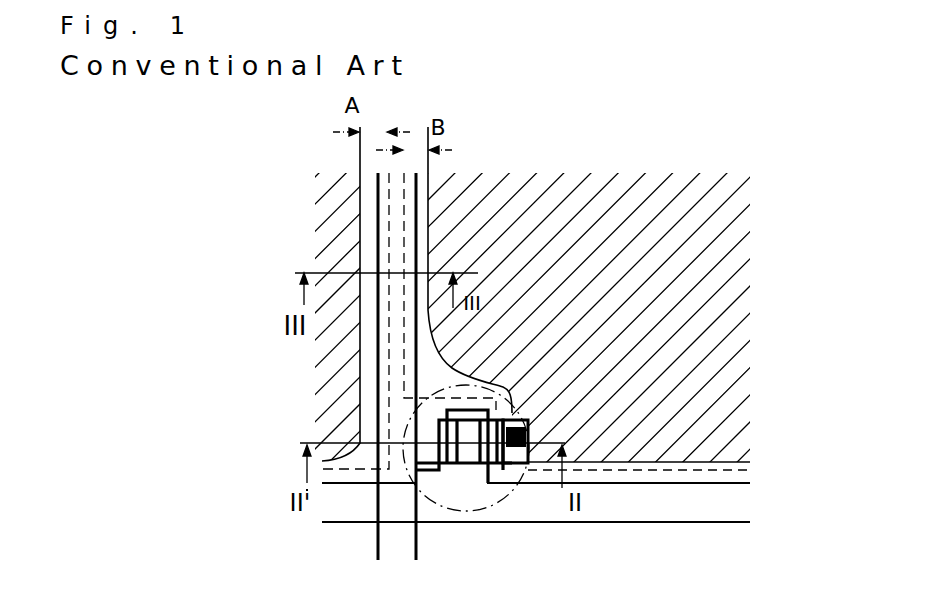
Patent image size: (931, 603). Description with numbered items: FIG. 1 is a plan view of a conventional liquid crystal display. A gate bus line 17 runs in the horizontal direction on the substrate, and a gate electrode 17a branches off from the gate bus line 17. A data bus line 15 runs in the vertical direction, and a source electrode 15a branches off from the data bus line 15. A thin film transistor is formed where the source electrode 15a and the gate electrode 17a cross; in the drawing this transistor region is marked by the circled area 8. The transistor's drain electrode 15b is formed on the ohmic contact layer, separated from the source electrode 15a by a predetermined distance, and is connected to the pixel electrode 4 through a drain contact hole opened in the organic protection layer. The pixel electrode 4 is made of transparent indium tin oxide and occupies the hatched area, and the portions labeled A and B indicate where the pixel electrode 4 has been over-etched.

The pixel electrode 4 is at (712, 310).
The thin film transistor 8 is at (483, 513).
The data bus line 15 is at (388, 543).
The source electrode 15a is at (433, 430).
The drain electrode 15b is at (508, 460).
The gate bus line 17 is at (658, 510).
The gate electrode 17a is at (465, 455).